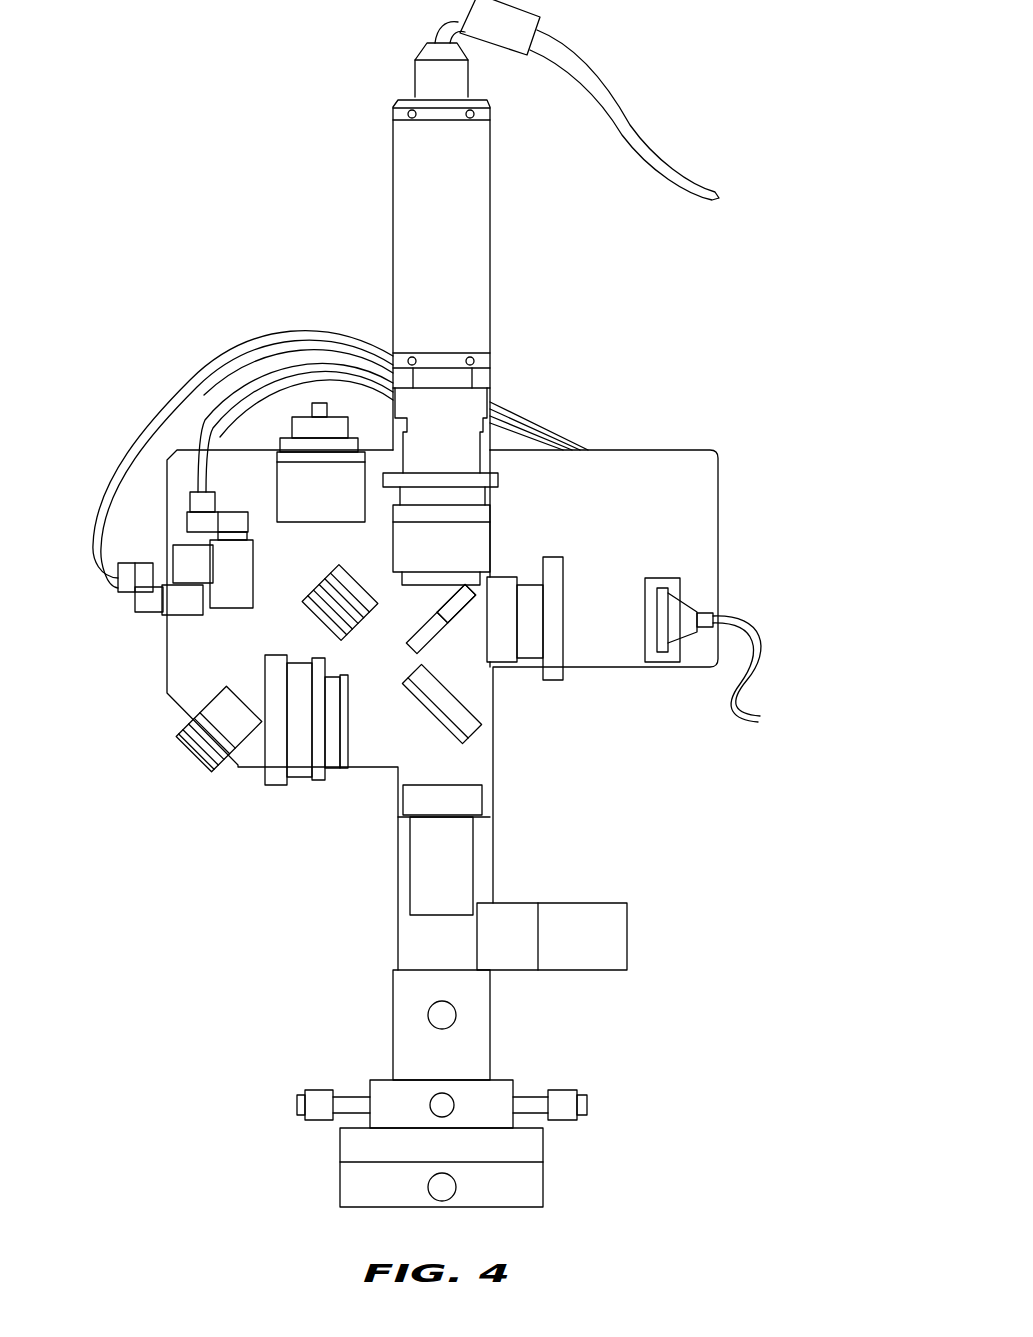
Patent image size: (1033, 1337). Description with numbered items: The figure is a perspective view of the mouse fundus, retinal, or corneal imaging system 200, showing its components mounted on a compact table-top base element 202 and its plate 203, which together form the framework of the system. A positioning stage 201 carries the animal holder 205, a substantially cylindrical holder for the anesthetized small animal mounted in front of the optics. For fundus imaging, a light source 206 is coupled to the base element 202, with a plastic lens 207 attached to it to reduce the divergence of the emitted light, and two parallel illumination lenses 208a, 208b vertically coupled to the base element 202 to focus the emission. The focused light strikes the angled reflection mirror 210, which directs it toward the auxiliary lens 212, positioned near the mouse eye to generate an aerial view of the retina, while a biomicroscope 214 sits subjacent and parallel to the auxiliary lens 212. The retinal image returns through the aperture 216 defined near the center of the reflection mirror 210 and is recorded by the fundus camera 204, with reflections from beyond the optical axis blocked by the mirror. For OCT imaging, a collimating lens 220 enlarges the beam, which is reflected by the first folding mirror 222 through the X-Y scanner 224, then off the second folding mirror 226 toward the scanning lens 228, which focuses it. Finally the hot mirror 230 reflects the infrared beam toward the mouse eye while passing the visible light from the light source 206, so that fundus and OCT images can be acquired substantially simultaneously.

The imaging system 200 is at (210, 242).
The positioning stage 201 is at (418, 990).
The base element 202 is at (705, 471).
The plate 203 is at (357, 1172).
The fundus camera 204 is at (465, 194).
The animal holder 205 is at (600, 934).
The light source 206 is at (684, 612).
The plastic lens 207 is at (650, 578).
The illumination lens 208a is at (499, 590).
The illumination lens 208b is at (550, 557).
The reflection mirror 210 is at (408, 645).
The auxiliary lens 212 is at (467, 798).
The biomicroscope 214 is at (420, 876).
The aperture 216 is at (451, 623).
The collimating lens 220 is at (342, 504).
The first folding mirror 222 is at (304, 608).
The X-Y scanner 224 is at (213, 616).
The second folding mirror 226 is at (203, 764).
The scanning lens 228 is at (307, 785).
The hot mirror 230 is at (472, 741).